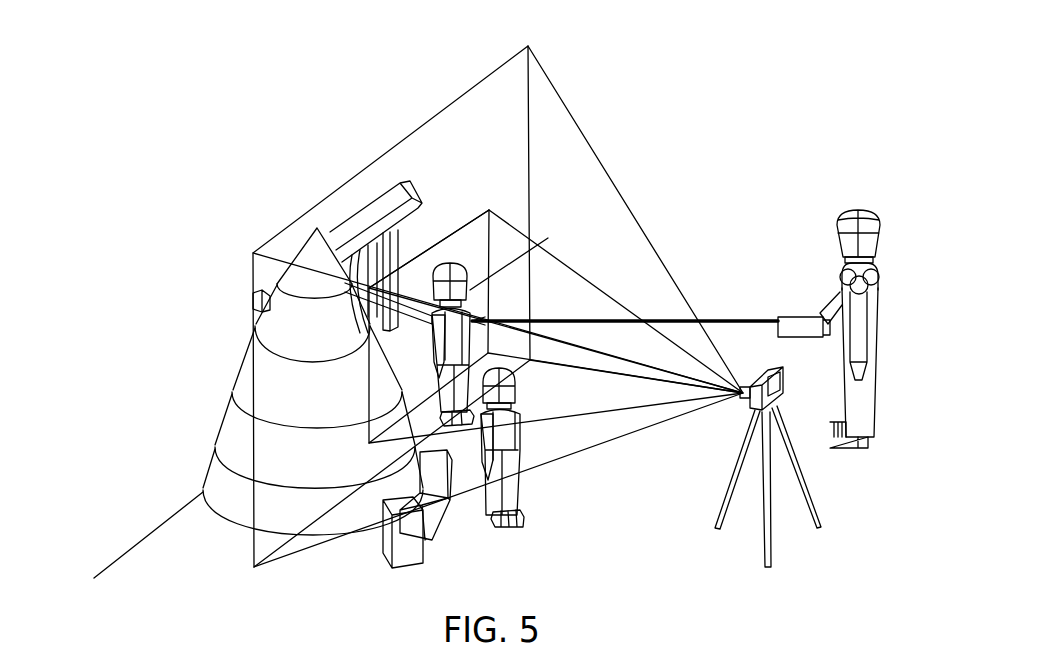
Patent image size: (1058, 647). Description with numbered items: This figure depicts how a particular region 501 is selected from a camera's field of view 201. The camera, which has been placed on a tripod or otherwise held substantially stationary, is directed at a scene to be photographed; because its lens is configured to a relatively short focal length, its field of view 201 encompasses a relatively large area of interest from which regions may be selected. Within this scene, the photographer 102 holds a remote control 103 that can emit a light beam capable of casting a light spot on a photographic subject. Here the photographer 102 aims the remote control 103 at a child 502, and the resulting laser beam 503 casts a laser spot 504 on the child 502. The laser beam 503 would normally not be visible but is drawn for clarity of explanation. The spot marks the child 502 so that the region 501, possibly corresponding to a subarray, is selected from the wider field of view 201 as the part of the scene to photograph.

The photographer 102 is at (856, 208).
The remote control 103 is at (803, 316).
The field of view 201 is at (370, 160).
The region 501 is at (463, 223).
The child 502 is at (489, 210).
The laser beam 503 is at (605, 320).
The laser spot 504 is at (472, 317).